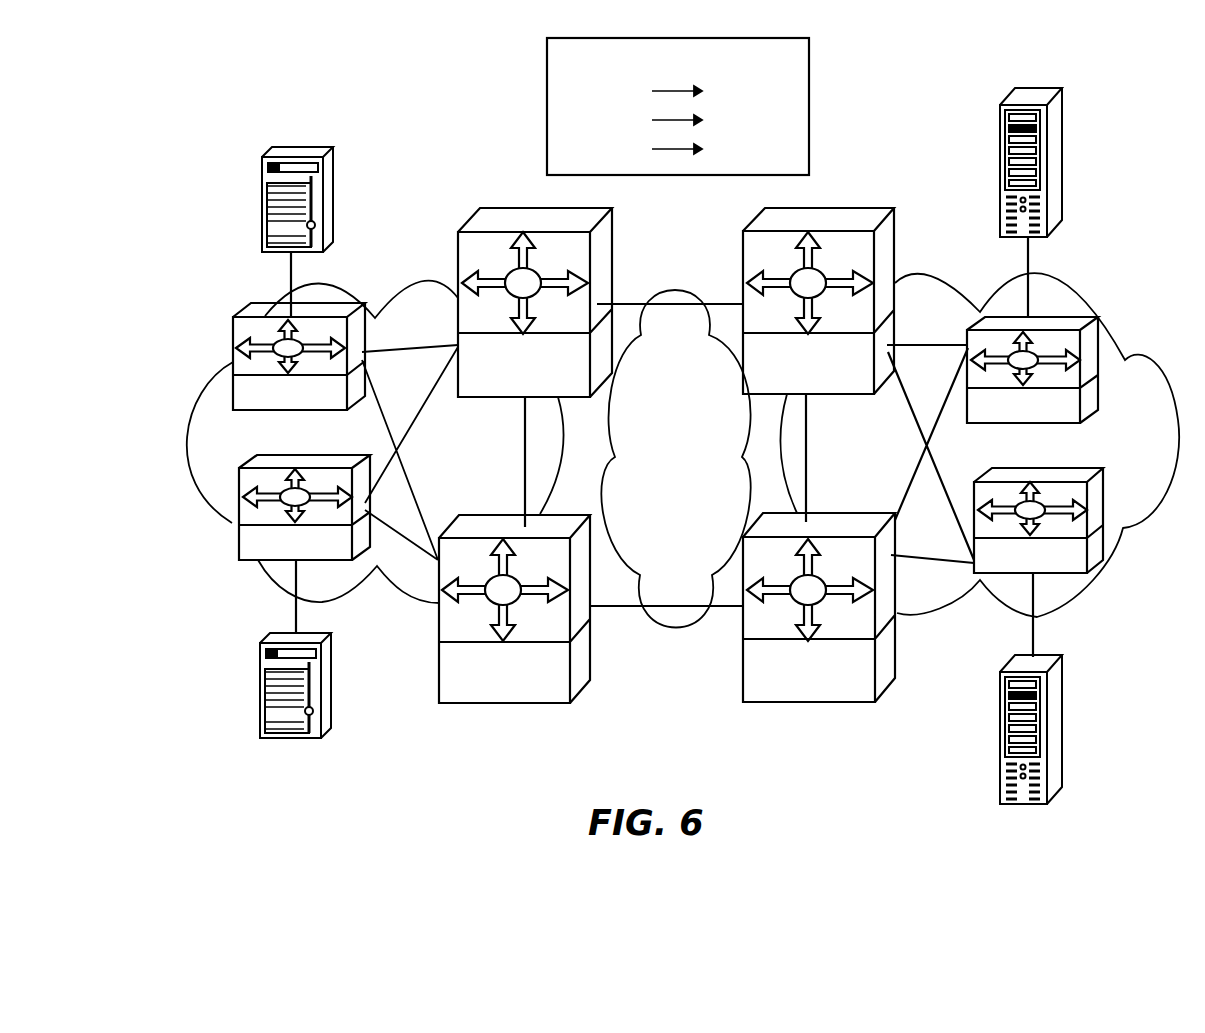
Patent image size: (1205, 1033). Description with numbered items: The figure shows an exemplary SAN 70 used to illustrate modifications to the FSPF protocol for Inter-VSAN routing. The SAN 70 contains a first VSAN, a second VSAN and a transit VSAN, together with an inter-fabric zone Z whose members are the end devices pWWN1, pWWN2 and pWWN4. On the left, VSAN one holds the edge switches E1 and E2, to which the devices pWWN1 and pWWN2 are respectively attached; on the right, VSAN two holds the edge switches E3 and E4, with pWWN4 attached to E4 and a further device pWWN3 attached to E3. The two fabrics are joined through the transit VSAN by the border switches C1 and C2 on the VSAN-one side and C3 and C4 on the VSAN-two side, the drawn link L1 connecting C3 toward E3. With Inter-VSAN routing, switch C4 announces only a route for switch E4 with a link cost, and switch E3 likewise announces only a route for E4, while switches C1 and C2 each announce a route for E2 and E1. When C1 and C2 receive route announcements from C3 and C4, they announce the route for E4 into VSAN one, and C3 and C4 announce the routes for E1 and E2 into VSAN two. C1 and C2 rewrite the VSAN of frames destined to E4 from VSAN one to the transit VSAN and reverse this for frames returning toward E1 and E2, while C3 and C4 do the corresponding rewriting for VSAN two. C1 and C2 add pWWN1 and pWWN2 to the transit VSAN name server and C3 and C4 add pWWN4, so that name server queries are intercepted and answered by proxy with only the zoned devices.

The SAN 70 is at (683, 441).
The Switch C1 is at (514, 598).
The Switch C2 is at (535, 287).
The Switch C3 is at (819, 593).
The Switch C4 is at (818, 286).
The Switch E1 is at (287, 507).
The Switch E2 is at (282, 356).
The Switch E3 is at (1055, 520).
The Switch E4 is at (1049, 370).
The link L1 is at (932, 572).
The device pWWN1 is at (292, 706).
The device pWWN2 is at (345, 199).
The host pWWN3 is at (1076, 729).
The device pWWN4 is at (1076, 162).